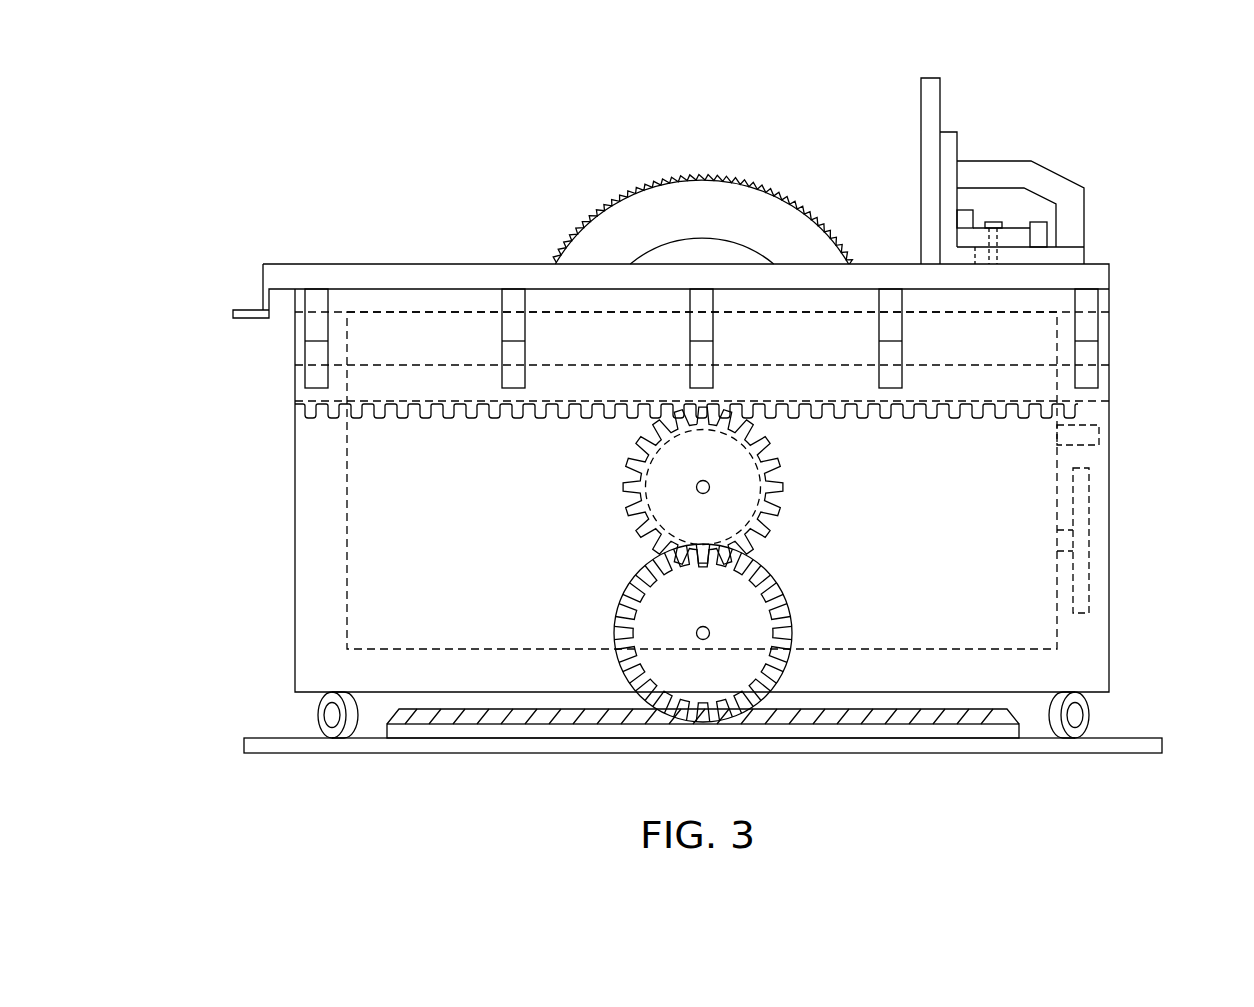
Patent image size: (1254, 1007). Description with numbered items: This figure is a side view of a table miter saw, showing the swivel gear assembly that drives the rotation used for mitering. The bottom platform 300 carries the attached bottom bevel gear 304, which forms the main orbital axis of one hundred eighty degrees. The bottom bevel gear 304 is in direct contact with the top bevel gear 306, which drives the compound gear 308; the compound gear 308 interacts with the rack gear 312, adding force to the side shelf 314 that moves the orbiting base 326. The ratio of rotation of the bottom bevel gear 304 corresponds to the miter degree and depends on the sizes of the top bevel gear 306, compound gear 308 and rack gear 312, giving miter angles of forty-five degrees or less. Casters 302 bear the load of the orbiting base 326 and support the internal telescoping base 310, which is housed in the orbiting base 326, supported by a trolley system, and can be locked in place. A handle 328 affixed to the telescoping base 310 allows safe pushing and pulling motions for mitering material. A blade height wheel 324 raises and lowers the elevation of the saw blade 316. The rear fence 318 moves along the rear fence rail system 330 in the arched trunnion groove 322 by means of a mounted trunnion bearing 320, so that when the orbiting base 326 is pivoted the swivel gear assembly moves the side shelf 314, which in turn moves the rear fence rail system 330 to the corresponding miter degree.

The bottom platform 300 is at (373, 744).
The casters 302 is at (318, 708).
The bottom bevel gear 304 is at (607, 732).
The top bevel gear 306 is at (717, 683).
The compound gear 308 is at (717, 525).
The telescoping base 310 is at (937, 558).
The rack gear 312 is at (617, 396).
The side shelf 314 is at (439, 288).
The saw blade 316 is at (723, 225).
The rear fence 318 is at (928, 94).
The trunnion bearing 320 is at (990, 223).
The trunnion groove 322 is at (1002, 255).
The blade height wheel 324 is at (1083, 543).
The orbiting base 326 is at (306, 543).
The handle 328 is at (1095, 432).
The rear fence rail system 330 is at (982, 167).